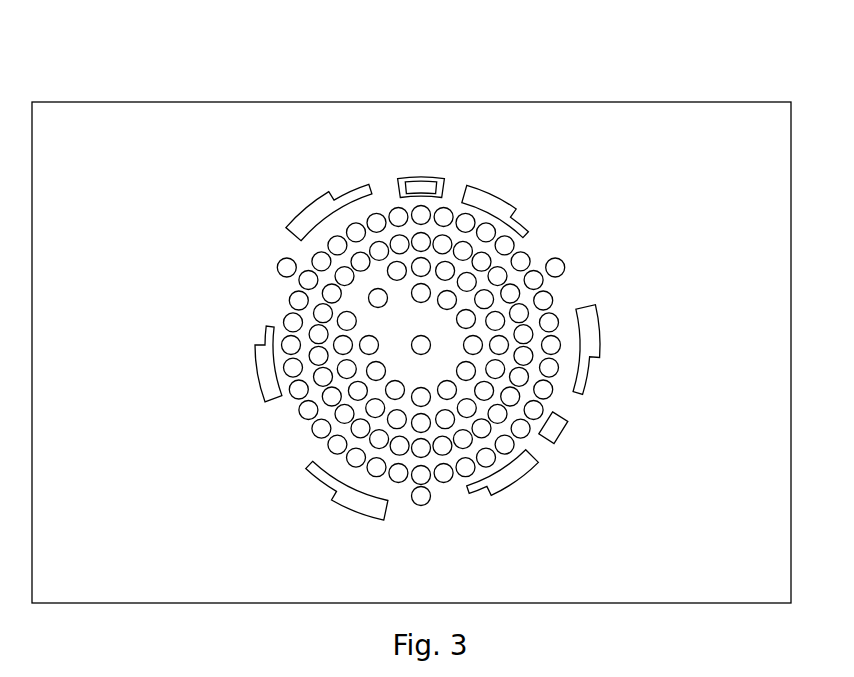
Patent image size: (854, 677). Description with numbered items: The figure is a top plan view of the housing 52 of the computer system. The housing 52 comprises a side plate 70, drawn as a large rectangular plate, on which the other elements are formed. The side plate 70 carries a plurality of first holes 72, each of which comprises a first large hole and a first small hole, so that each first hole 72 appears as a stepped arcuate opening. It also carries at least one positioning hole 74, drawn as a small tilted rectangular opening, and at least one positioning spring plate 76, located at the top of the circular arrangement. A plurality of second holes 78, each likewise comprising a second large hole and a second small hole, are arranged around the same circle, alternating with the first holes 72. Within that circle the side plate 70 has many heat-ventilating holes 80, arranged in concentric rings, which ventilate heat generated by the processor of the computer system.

The housing 52 is at (636, 71).
The side plate 70 is at (757, 100).
The first holes 72 is at (310, 215).
The positioning hole 74 is at (560, 430).
The positioning spring plate 76 is at (422, 188).
The second holes 78 is at (488, 204).
The heat-ventilating hole 80 is at (524, 256).